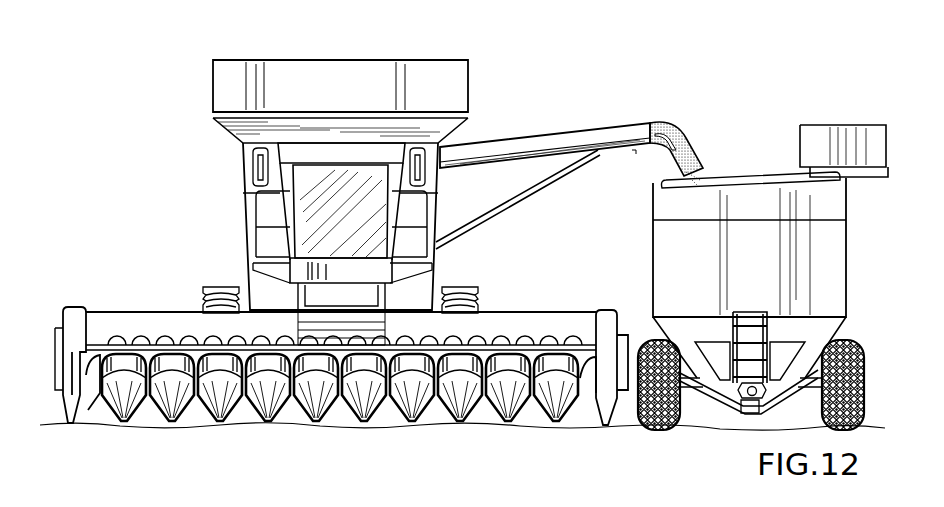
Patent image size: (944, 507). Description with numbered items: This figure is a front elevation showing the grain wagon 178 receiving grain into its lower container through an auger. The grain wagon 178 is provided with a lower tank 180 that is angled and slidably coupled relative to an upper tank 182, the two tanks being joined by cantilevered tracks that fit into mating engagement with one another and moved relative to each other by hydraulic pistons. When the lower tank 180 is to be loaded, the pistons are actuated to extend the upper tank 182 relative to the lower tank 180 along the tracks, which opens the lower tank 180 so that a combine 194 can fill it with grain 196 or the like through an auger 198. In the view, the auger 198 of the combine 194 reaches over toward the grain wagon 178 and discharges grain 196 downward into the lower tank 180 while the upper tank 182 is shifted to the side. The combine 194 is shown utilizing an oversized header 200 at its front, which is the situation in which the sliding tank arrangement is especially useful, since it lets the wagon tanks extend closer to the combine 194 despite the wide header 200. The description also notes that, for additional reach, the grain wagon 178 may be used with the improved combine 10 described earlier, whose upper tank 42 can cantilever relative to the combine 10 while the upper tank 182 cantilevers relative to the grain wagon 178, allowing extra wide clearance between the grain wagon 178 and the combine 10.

The improved combine 10 is at (352, 56).
The upper tank 42 is at (420, 62).
The grain wagon 178 is at (652, 220).
The lower tank 180 is at (753, 202).
The upper tank 182 is at (804, 135).
The combine 194 is at (255, 242).
The grain 196 is at (686, 168).
The auger 198 is at (605, 133).
The oversized header 200 is at (183, 320).